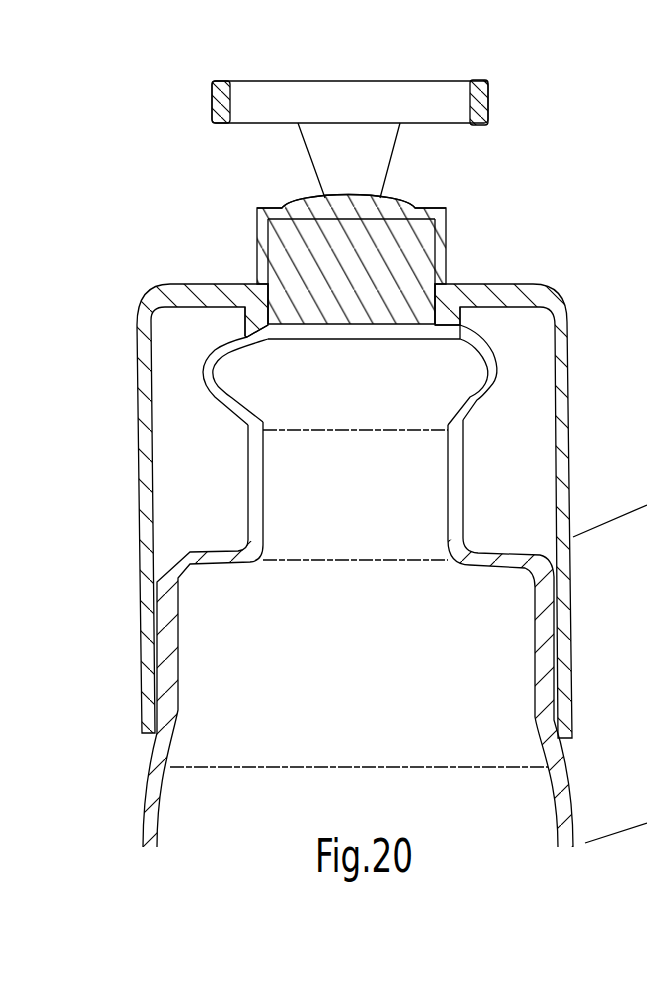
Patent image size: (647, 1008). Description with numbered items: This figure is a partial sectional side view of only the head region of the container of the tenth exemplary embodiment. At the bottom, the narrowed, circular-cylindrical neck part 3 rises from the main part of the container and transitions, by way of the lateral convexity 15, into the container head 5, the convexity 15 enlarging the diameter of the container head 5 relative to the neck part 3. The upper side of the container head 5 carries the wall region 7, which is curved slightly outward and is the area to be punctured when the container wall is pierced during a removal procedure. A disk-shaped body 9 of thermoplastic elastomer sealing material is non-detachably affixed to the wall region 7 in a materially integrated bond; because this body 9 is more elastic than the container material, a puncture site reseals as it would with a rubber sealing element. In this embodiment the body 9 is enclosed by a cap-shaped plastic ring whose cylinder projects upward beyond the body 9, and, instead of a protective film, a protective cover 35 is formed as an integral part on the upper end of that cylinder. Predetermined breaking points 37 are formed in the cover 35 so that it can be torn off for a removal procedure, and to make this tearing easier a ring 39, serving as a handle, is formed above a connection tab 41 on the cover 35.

The neck part 3 is at (463, 475).
The container head 5 is at (233, 342).
The wall region 7 is at (363, 324).
The disk-shaped body 9 is at (400, 252).
The lateral convexity 15 is at (503, 368).
The protective cover 35 is at (400, 203).
The predetermined breaking points 37 is at (288, 212).
The ring 39 is at (490, 95).
The connection tab 41 is at (312, 142).